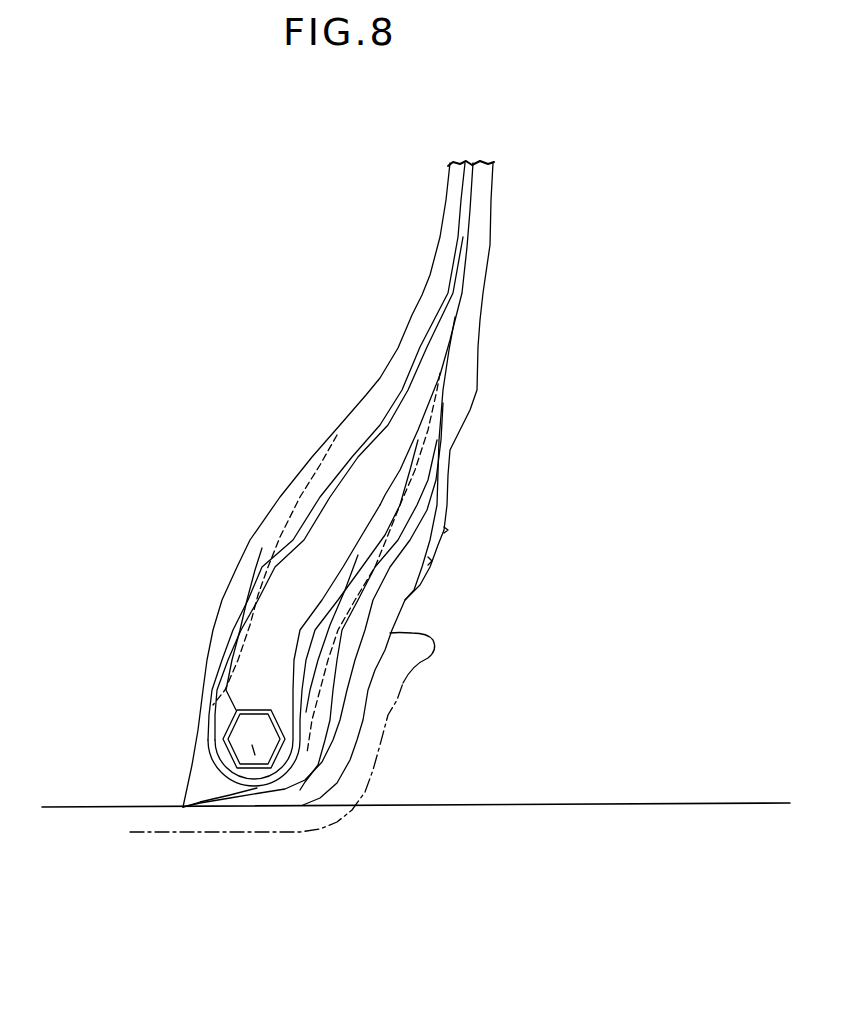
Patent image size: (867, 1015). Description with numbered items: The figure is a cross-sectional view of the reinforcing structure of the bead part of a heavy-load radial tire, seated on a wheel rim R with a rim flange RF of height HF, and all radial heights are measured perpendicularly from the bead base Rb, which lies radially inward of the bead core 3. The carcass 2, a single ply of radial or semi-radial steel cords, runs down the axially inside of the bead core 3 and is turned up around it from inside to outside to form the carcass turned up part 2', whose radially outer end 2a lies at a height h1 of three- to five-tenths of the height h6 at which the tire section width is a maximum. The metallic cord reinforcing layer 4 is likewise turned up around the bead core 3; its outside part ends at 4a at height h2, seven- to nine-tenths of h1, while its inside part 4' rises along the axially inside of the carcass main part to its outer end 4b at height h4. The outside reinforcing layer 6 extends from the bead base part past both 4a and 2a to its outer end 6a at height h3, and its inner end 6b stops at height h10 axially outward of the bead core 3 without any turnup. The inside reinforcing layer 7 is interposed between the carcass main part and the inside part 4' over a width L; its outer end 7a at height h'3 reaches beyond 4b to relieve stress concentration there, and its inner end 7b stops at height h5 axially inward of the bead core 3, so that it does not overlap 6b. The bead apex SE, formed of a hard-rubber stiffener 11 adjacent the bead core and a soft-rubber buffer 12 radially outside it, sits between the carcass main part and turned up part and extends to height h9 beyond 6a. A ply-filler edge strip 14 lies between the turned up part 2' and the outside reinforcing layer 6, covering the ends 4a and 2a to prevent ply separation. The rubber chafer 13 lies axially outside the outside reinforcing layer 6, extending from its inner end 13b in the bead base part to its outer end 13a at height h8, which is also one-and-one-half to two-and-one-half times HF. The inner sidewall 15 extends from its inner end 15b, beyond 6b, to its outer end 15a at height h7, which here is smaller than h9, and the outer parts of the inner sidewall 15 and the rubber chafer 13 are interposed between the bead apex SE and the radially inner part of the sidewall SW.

The carcass 2 is at (336, 474).
The radially outer end of the carcass turned up part 2a is at (382, 505).
The carcass turned up part 2' is at (390, 672).
The bead core 3 is at (241, 810).
The metallic cord reinforcing layer 4 is at (381, 635).
The radially outer end of the outside part of the metallic cord reinforcing layer 4a is at (358, 555).
The radially outer end of the inside part of the metallic cord reinforcing layer 4b is at (262, 548).
The inside part of the metallic cord reinforcing layer 4' is at (232, 629).
The outside reinforcing layer 6 is at (440, 455).
The radially outer end of the outside reinforcing layer 6a is at (441, 373).
The radially inner end of the outside reinforcing layer 6b is at (310, 752).
The inside reinforcing layer 7 is at (302, 490).
The radially outer end of the inside reinforcing layer 7a is at (338, 440).
The radially inner end of the inside reinforcing layer 7b is at (210, 702).
The stiffener 11 is at (338, 425).
The buffer 12 is at (400, 417).
The rubber chafer 13 is at (395, 595).
The radially outer end of the rubber chafer 13a is at (444, 405).
The radially inner end of the rubber chafer 13b is at (272, 800).
The ply-filler edge strip 14 is at (444, 530).
The inner sidewall 15 is at (422, 487).
The radially outer end of the inner sidewall 15a is at (458, 316).
The radially inner end of the inner sidewall 15b is at (300, 790).
The bead apex SE is at (210, 262).
The sidewall SW is at (477, 287).
The rim flange RF is at (420, 640).
The wheel rim R is at (146, 836).
The bead base Rb is at (217, 807).
The width of the interposed zone L is at (212, 702).
The height of the rim flange HF is at (395, 630).
The height of the outer end of the carcass turned up part h1 is at (380, 504).
The height of the outer end of the outside part of the metallic cord reinforcing lay h2 is at (357, 555).
The height of the outer end of the outside reinforcing layer h3 is at (440, 374).
The height of the outer end of the inside reinforcing layer h'3 is at (219, 625).
The height of the outer end of the inside part of the metallic cord reinforcing laye h4 is at (262, 548).
The height of the inner end of the inside reinforcing layer h5 is at (232, 709).
The maximum section width height h6 is at (452, 183).
The height of the outer end of the inner sidewall h7 is at (455, 317).
The height of the outer end of the rubber chafer h8 is at (443, 403).
The height of the outer end of the bead apex h9 is at (467, 245).
The height of the inner end of the outside reinforcing layer h10 is at (308, 762).